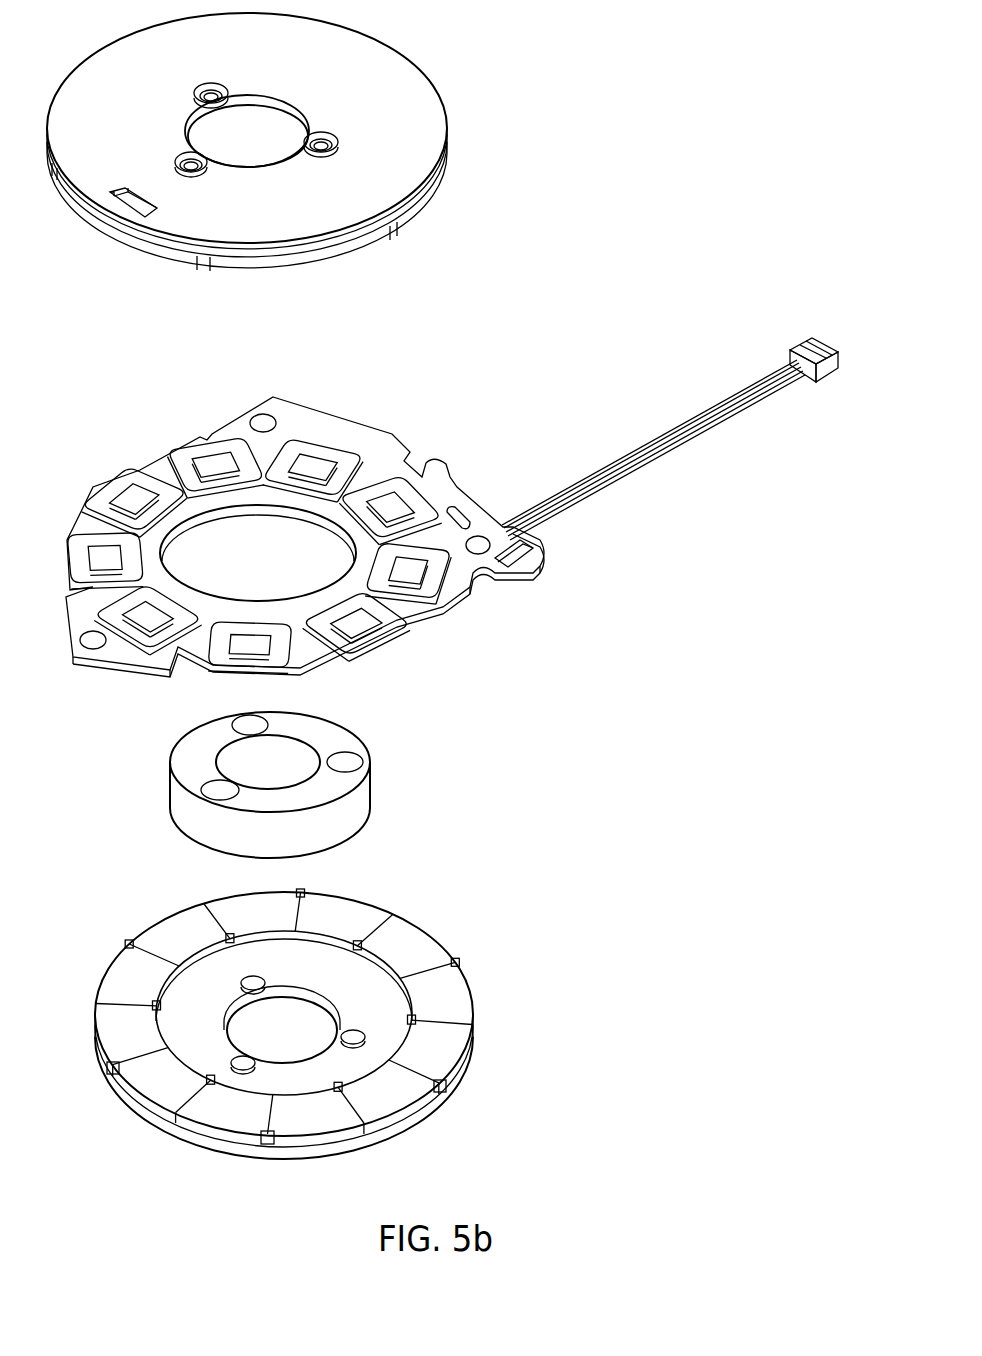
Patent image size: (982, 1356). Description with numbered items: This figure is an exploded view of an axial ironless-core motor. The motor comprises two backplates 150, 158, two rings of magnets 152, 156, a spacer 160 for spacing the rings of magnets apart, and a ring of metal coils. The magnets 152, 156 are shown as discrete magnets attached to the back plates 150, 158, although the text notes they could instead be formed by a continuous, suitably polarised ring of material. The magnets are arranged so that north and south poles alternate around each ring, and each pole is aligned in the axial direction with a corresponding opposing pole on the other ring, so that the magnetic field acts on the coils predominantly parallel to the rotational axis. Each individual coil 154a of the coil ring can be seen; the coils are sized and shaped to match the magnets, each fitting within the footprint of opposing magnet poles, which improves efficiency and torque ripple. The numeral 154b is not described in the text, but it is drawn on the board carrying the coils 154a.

The backplate 150 is at (407, 88).
The ring of magnets 152 is at (430, 207).
The individual coil 154a is at (425, 497).
The circuit board 154b is at (457, 593).
The ring of magnets 156 is at (455, 998).
The backplate 158 is at (415, 1128).
The spacer 160 is at (370, 785).